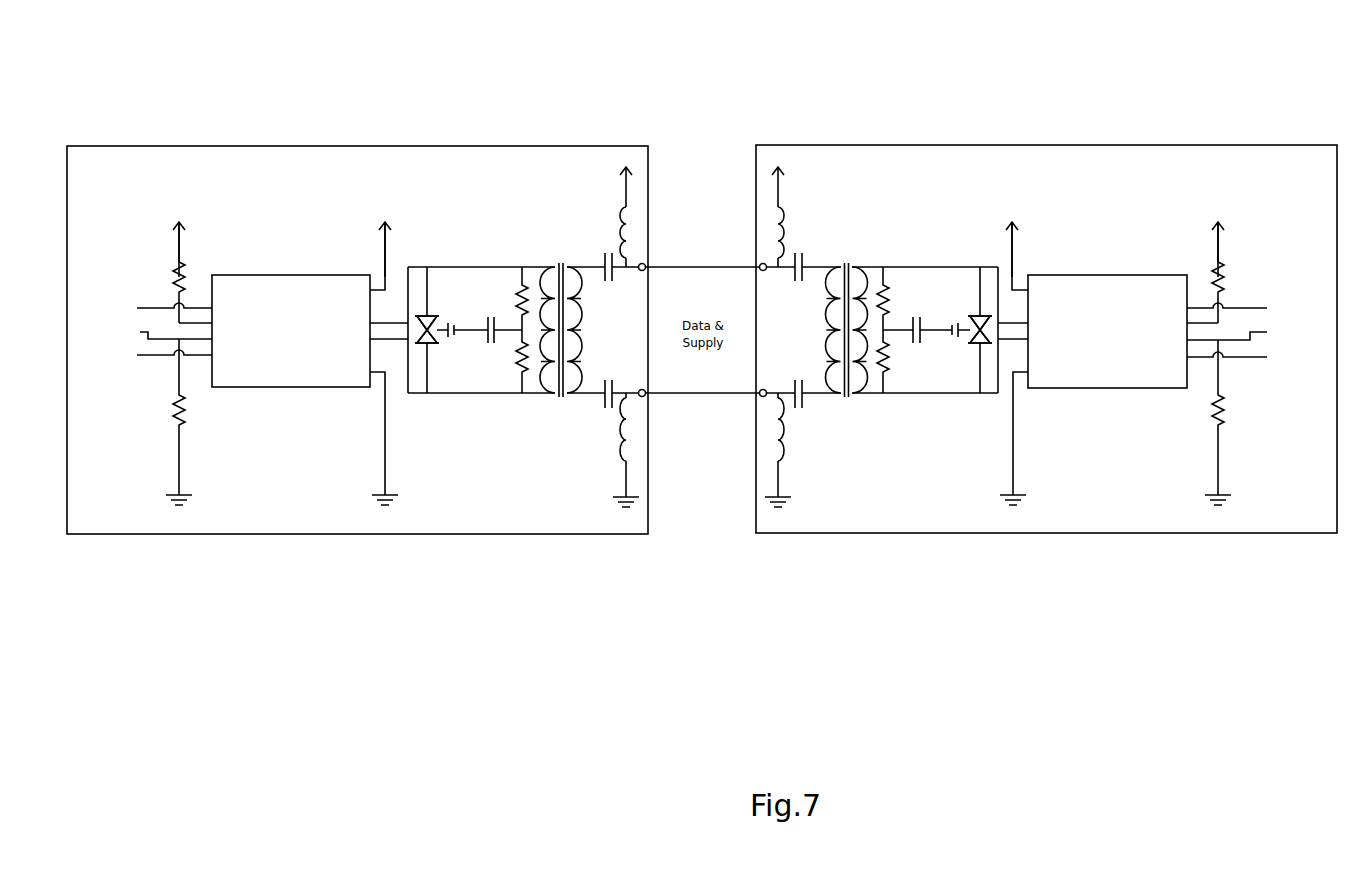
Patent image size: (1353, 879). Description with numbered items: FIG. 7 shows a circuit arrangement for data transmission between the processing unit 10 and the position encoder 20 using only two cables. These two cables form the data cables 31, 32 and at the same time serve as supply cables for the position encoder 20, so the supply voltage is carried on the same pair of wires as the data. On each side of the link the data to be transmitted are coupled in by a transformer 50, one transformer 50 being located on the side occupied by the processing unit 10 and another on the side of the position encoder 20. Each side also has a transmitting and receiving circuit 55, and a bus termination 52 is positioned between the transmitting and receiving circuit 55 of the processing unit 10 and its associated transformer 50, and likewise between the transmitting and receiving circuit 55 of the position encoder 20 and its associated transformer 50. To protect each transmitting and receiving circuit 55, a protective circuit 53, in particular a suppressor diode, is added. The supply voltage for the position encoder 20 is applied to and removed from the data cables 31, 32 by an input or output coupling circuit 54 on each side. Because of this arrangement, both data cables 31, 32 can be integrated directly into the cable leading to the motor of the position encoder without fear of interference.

The processing unit 10 is at (113, 192).
The position encoder 20 is at (1233, 170).
The data cable 31 is at (679, 265).
The data cable 32 is at (716, 395).
The transformer 50 is at (560, 262).
The bus termination 52 is at (475, 375).
The protective circuit 53 is at (422, 318).
The input or output coupling circuit 54 is at (630, 205).
The transmitting and receiving circuit 55 is at (271, 290).